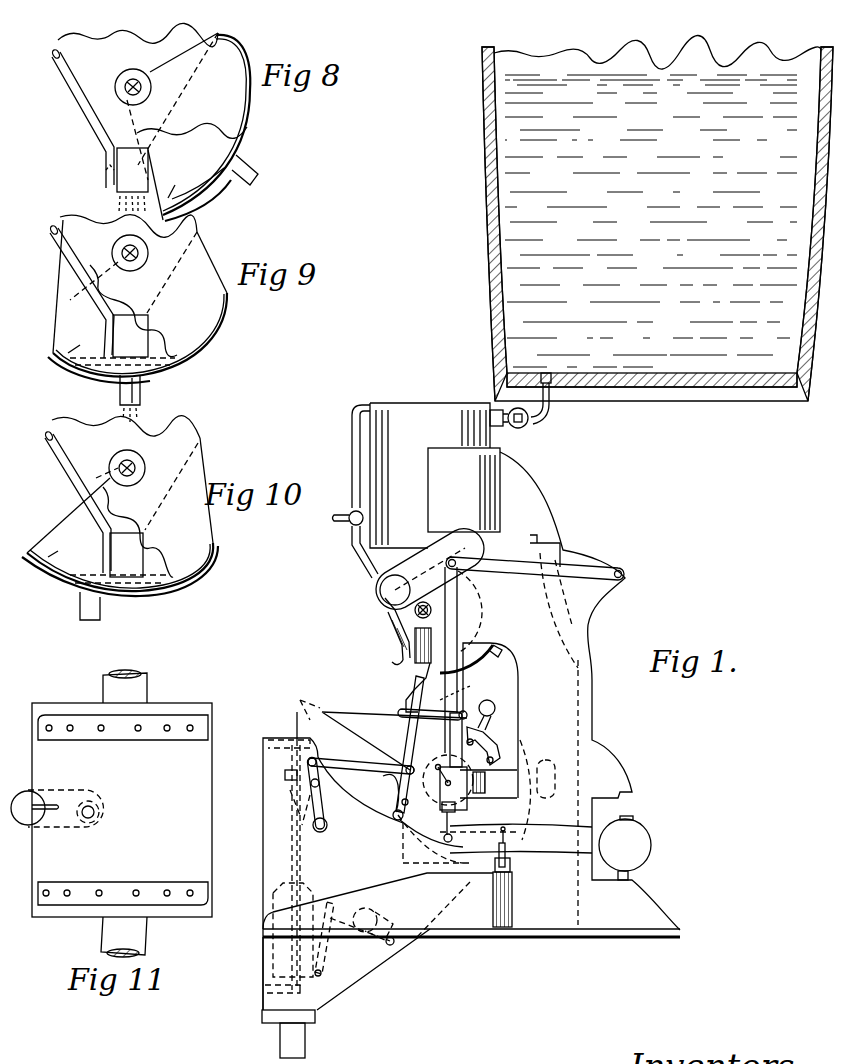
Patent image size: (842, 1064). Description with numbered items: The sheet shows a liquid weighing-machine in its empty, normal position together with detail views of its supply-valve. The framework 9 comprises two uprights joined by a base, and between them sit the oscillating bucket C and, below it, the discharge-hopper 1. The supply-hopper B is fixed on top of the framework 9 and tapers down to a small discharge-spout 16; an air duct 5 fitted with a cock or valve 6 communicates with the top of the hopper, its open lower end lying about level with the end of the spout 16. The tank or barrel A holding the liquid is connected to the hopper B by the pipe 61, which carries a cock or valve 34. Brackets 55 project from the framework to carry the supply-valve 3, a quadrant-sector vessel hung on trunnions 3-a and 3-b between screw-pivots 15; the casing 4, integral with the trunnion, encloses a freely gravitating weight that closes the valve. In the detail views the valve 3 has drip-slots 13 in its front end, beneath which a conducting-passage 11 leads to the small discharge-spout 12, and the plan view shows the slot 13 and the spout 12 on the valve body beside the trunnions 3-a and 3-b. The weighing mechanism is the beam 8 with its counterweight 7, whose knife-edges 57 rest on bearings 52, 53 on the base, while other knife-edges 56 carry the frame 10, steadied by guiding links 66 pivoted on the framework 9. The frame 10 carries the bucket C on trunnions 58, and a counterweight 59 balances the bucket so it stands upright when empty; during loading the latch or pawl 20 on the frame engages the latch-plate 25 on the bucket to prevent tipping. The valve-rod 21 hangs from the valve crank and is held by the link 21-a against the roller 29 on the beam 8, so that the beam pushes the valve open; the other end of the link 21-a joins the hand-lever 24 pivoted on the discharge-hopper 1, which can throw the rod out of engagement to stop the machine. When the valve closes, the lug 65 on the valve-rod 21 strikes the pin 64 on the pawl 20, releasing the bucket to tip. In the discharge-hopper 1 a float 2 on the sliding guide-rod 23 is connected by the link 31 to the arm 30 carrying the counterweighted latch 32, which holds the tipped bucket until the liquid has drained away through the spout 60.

In FIG. 1, the tank or barrel A is at (480, 197).
In FIG. 1, the supply-hopper B is at (400, 412).
In FIG. 1, the bucket C is at (366, 720).
In FIG. 1, the discharge-hopper 1 is at (277, 823).
In FIG. 1, the float 2 is at (283, 953).
In FIG. 8, the supply-valve 3 is at (232, 128).
In FIG. 9, the supply-valve 3 is at (217, 326).
In FIG. 10, the supply-valve 3 is at (200, 556).
In FIG. 11, the supply-valve 3 is at (196, 867).
In FIG. 1, the supply-valve 3 is at (480, 611).
In FIG. 11, the trunnion 3-a is at (137, 933).
In FIG. 11, the trunnion 3-b is at (147, 681).
In FIG. 1, the casing 4 is at (365, 568).
In FIG. 8, the air pipe or duct 5 is at (86, 126).
In FIG. 9, the air pipe or duct 5 is at (75, 272).
In FIG. 10, the air pipe or duct 5 is at (66, 477).
In FIG. 1, the air pipe or duct 5 is at (396, 638).
In FIG. 1, the cock or valve 6 is at (350, 522).
In FIG. 1, the counterweight 7 is at (645, 835).
In FIG. 1, the beam 8 is at (558, 846).
In FIG. 1, the framework 9 is at (578, 708).
In FIG. 1, the frame 10 is at (504, 797).
In FIG. 8, the conducting-passage 11 is at (200, 206).
In FIG. 9, the conducting-passage 11 is at (60, 365).
In FIG. 10, the conducting-passage 11 is at (50, 576).
In FIG. 11, the conducting-passage 11 is at (25, 822).
In FIG. 8, the discharge-spout 12 is at (257, 178).
In FIG. 9, the discharge-spout 12 is at (142, 400).
In FIG. 10, the discharge-spout 12 is at (88, 621).
In FIG. 11, the discharge-spout 12 is at (92, 806).
In FIG. 1, the discharge-spout 12 is at (500, 656).
In FIG. 8, the drip-slot 13 is at (196, 183).
In FIG. 9, the drip-slot 13 is at (81, 341).
In FIG. 10, the drip-slot 13 is at (60, 546).
In FIG. 11, the drip-slot 13 is at (50, 812).
In FIG. 8, the screw-pivots 15 is at (141, 87).
In FIG. 9, the screw-pivots 15 is at (135, 259).
In FIG. 10, the screw-pivots 15 is at (138, 464).
In FIG. 1, the screw-pivots 15 is at (423, 610).
In FIG. 8, the discharge-spout 16 is at (117, 186).
In FIG. 9, the discharge-spout 16 is at (138, 336).
In FIG. 10, the discharge-spout 16 is at (135, 563).
In FIG. 1, the discharge-spout 16 is at (418, 666).
In FIG. 1, the latch or pawl 20 is at (445, 722).
In FIG. 1, the valve-rod 21 is at (410, 736).
In FIG. 1, the link 21-a is at (392, 766).
In FIG. 1, the sliding guide-rod 23 is at (297, 722).
In FIG. 1, the hand-lever 24 is at (325, 800).
In FIG. 1, the latch-plate 25 is at (492, 740).
In FIG. 1, the roller 29 is at (392, 811).
In FIG. 1, the arm 30 is at (384, 930).
In FIG. 1, the link 31 is at (328, 950).
In FIG. 1, the counterweighted latch 32 is at (370, 920).
In FIG. 1, the cock or valve 34 is at (524, 428).
In FIG. 1, the bearing 52 is at (499, 848).
In FIG. 1, the bearing 53 is at (513, 870).
In FIG. 1, the brackets 55 is at (450, 598).
In FIG. 1, the knife-edges 56 is at (446, 846).
In FIG. 1, the knife-edges 57 is at (508, 834).
In FIG. 1, the trunnions 58 is at (440, 792).
In FIG. 1, the counterweight 59 is at (540, 757).
In FIG. 1, the spout 60 is at (305, 1048).
In FIG. 1, the pipe 61 is at (529, 418).
In FIG. 1, the pin 64 is at (402, 716).
In FIG. 1, the lug 65 is at (410, 704).
In FIG. 1, the guiding links 66 is at (538, 575).